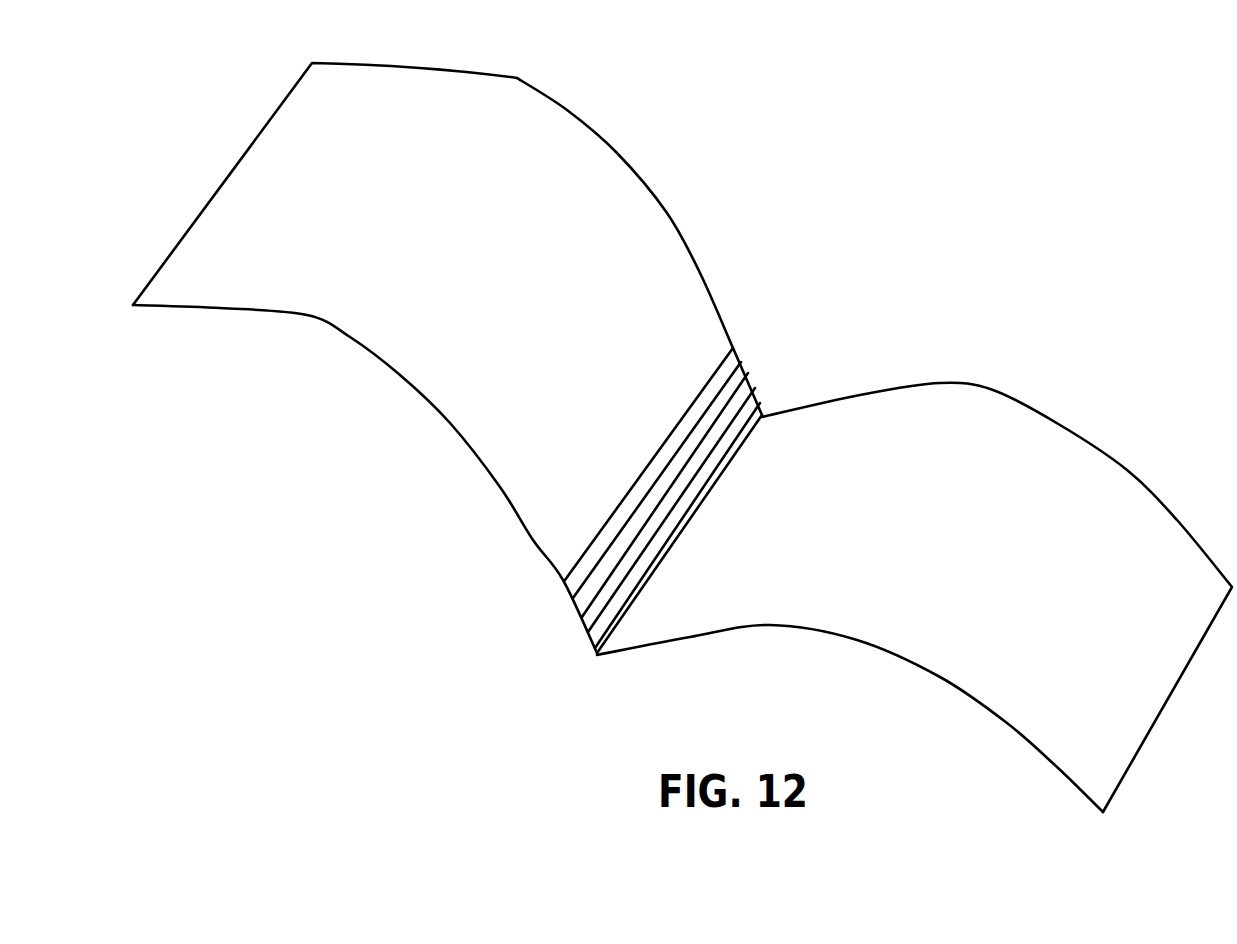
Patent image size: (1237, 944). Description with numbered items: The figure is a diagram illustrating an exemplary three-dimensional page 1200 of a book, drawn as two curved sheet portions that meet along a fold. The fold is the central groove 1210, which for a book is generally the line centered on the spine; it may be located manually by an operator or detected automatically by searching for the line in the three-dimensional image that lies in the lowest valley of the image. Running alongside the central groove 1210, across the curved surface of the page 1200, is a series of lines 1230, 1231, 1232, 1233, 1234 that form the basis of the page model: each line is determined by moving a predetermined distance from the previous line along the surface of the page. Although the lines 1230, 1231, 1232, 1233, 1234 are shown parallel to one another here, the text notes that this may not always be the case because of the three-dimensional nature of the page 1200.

The three-dimensional page 1200 is at (682, 437).
The central groove 1210 is at (688, 496).
The line 1230 is at (762, 407).
The line 1231 is at (757, 395).
The line 1232 is at (749, 370).
The line 1233 is at (741, 360).
The line 1234 is at (731, 349).